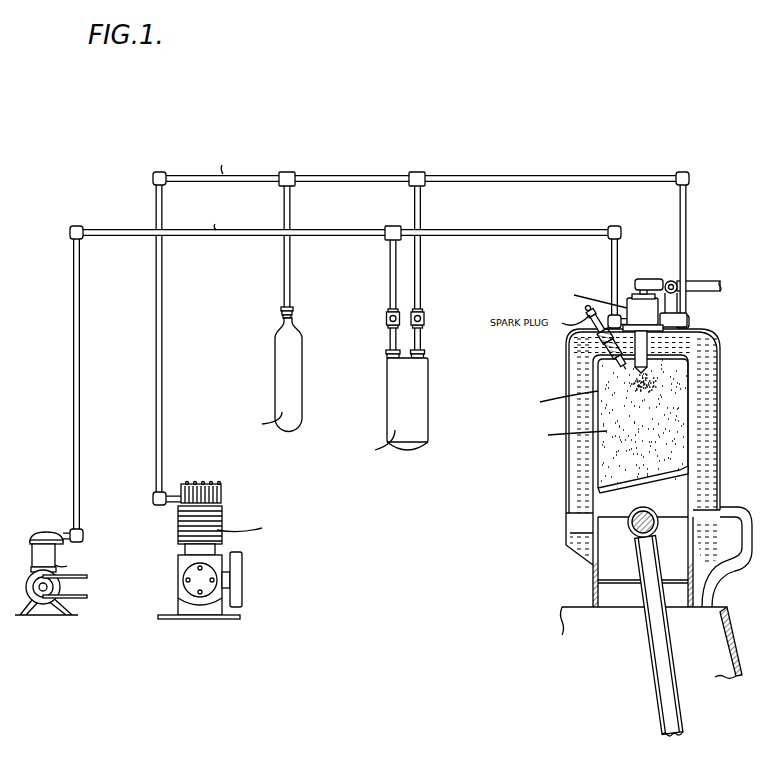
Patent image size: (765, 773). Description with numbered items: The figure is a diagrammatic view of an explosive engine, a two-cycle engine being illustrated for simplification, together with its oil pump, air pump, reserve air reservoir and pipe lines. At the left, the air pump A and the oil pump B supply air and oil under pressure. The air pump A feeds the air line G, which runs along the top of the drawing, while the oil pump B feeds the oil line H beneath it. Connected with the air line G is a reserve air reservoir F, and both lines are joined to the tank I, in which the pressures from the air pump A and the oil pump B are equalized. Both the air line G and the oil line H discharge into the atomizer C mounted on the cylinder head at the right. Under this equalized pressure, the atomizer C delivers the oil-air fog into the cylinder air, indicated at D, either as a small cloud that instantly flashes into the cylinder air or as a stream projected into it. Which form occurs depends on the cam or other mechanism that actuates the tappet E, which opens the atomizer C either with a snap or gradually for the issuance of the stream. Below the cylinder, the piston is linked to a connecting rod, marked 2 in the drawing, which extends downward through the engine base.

The air pump A is at (240, 578).
The oil pump B is at (52, 534).
The atomizer C is at (628, 310).
The cylinder air D is at (657, 372).
The tappet E is at (712, 268).
The reserve air reservoir F is at (275, 370).
The air line G is at (342, 160).
The oil line H is at (73, 365).
The tank I is at (390, 381).
The connecting rod 2 is at (681, 719).